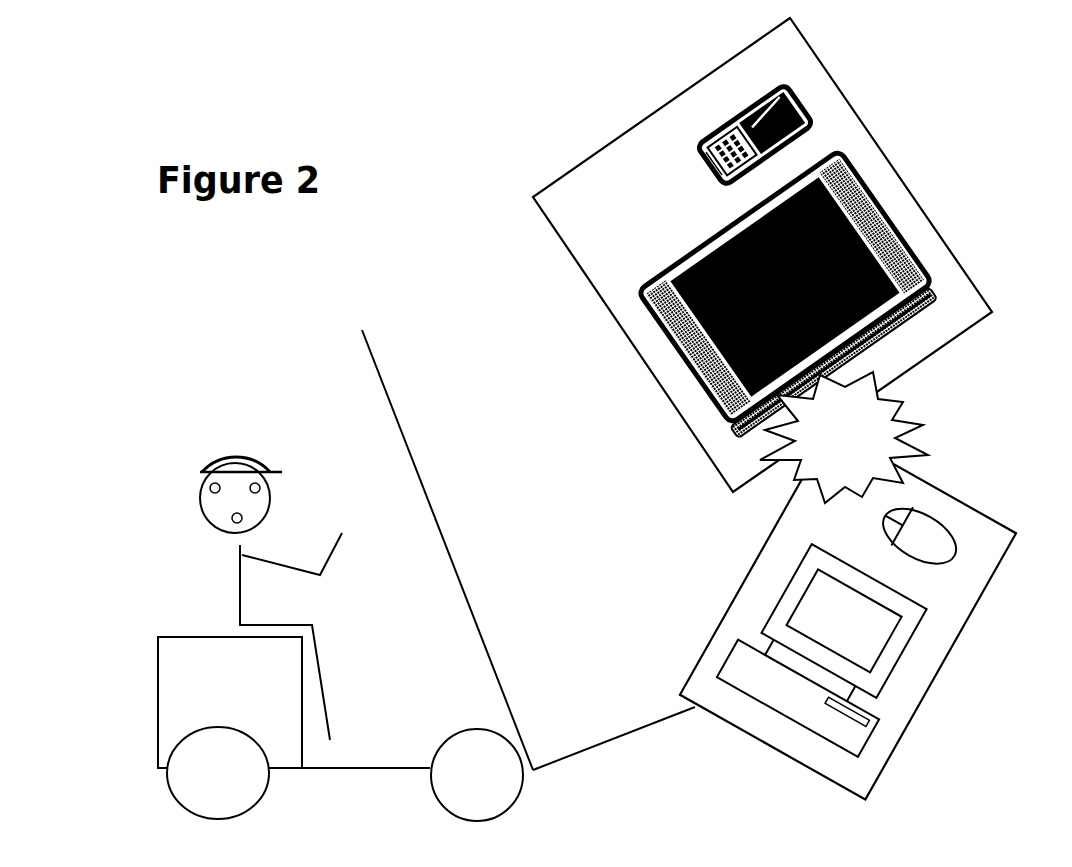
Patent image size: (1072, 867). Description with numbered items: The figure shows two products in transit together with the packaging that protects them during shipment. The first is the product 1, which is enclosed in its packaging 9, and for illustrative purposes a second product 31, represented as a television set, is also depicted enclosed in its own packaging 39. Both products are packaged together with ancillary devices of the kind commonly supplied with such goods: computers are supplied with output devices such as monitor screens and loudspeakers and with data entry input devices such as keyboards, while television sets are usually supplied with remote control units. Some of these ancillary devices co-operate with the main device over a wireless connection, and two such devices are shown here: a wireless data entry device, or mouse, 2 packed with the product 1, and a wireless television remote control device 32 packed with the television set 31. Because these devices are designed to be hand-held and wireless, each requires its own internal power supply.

The product 1 is at (918, 637).
The wireless data entry device 2 is at (967, 545).
The packaging 9 is at (727, 597).
The second product 31 is at (930, 262).
The wireless television remote control device 32 is at (818, 108).
The packaging 39 is at (595, 292).